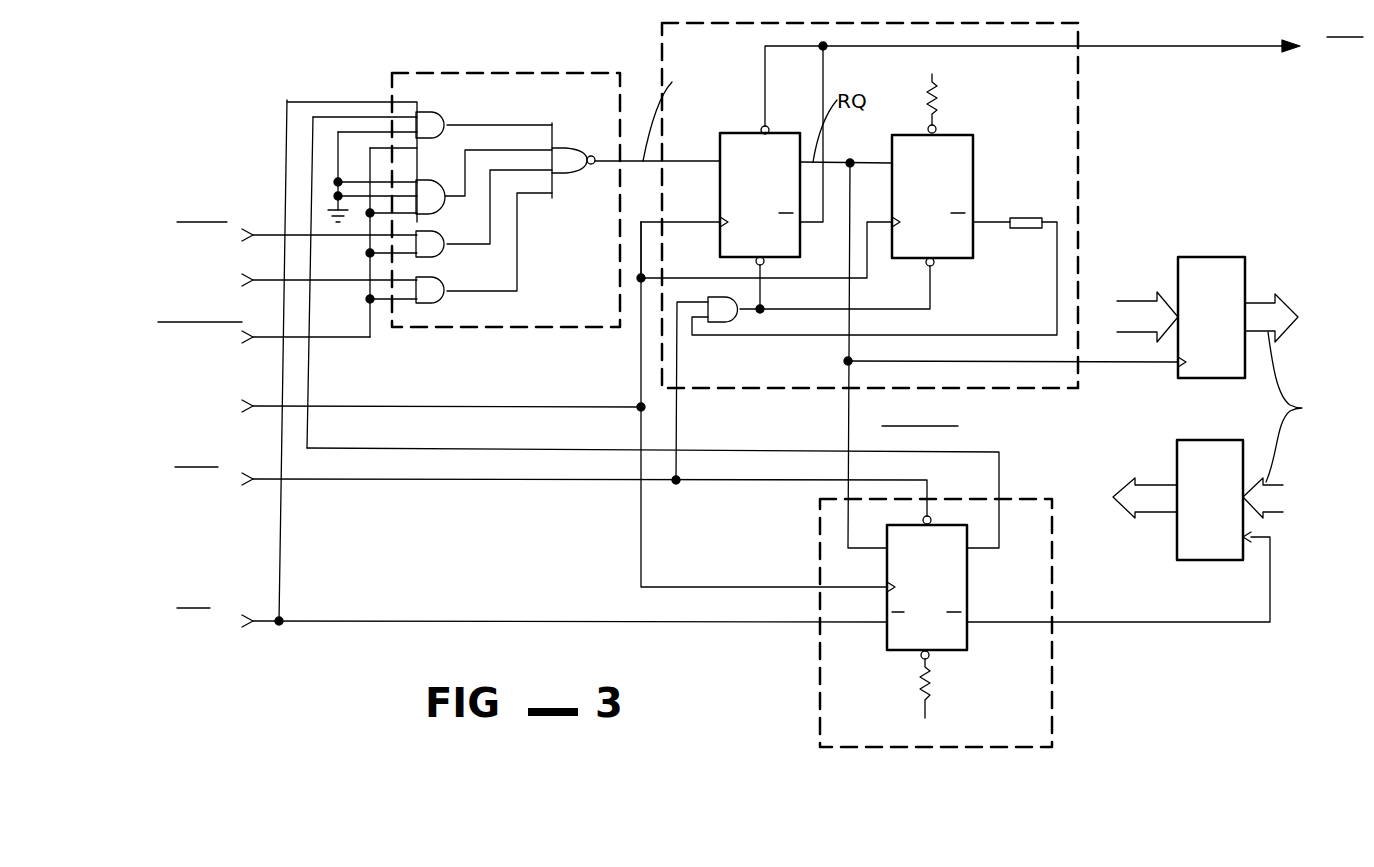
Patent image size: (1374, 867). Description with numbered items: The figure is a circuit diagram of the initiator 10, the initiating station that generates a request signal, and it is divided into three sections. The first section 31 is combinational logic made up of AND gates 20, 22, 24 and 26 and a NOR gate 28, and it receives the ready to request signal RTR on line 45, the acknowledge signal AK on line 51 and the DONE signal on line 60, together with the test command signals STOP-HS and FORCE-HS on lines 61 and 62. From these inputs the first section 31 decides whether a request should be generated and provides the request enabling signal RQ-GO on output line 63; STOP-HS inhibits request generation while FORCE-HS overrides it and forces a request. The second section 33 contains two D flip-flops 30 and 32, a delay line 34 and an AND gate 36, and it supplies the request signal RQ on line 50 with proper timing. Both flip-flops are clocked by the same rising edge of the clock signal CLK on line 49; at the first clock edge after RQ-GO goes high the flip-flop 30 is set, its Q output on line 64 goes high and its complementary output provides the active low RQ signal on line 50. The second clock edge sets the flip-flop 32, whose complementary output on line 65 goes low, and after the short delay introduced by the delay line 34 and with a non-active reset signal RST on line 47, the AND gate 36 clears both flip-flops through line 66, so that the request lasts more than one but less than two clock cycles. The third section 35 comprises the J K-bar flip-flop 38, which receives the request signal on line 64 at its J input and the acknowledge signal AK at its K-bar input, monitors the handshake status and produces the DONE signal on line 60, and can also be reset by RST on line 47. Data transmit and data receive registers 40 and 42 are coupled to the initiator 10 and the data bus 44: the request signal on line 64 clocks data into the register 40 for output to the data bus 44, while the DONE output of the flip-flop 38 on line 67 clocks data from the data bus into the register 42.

The initiator 10 is at (505, 33).
The AND gate 20 is at (438, 120).
The AND gate 22 is at (434, 188).
The AND gate 24 is at (430, 237).
The AND gate 26 is at (437, 283).
The NOR gate 28 is at (567, 148).
The first D flip-flop 30 is at (778, 138).
The first section 31 is at (567, 80).
The second D flip-flop 32 is at (947, 142).
The second section 33 is at (1080, 37).
The delay line 34 is at (1020, 230).
The third section 35 is at (1030, 505).
The AND gate 36 is at (737, 317).
The J K-bar flip-flop 38 is at (965, 575).
The data transmit register 40 is at (1212, 260).
The data receive register 42 is at (1218, 445).
The data bus 44 is at (1293, 385).
The RTR line 45 is at (268, 233).
The RST line 47 is at (260, 476).
The CLK line 49 is at (262, 403).
The RQ line 50 is at (1247, 47).
The AK line 51 is at (266, 604).
The DONE-bar line 60 is at (1000, 460).
The STOP-HS line 61 is at (267, 279).
The FORCE-HS line 62 is at (267, 336).
The RQ-GO output line 63 is at (687, 160).
The RQ line 64 is at (867, 158).
The Q-bar output line 65 is at (983, 220).
The clear line 66 is at (780, 308).
The DONE line 67 is at (1110, 623).